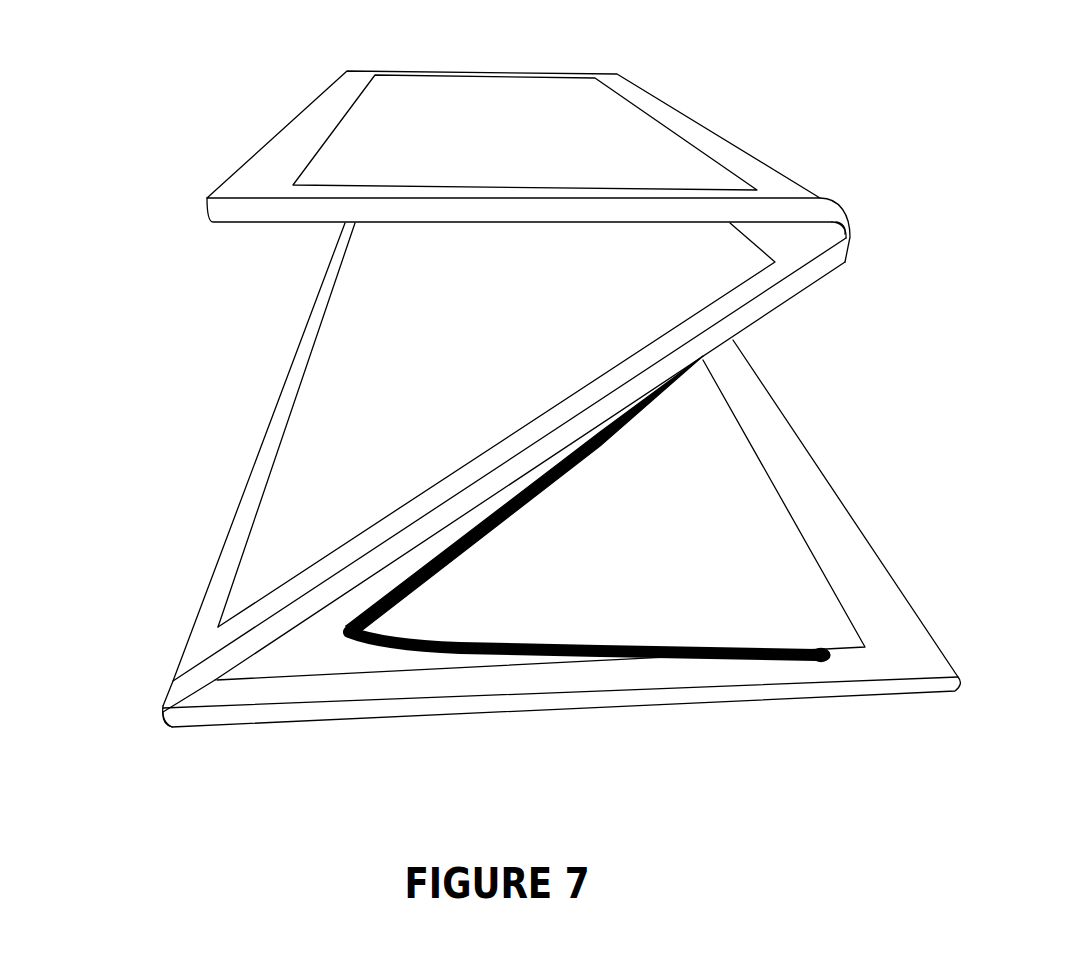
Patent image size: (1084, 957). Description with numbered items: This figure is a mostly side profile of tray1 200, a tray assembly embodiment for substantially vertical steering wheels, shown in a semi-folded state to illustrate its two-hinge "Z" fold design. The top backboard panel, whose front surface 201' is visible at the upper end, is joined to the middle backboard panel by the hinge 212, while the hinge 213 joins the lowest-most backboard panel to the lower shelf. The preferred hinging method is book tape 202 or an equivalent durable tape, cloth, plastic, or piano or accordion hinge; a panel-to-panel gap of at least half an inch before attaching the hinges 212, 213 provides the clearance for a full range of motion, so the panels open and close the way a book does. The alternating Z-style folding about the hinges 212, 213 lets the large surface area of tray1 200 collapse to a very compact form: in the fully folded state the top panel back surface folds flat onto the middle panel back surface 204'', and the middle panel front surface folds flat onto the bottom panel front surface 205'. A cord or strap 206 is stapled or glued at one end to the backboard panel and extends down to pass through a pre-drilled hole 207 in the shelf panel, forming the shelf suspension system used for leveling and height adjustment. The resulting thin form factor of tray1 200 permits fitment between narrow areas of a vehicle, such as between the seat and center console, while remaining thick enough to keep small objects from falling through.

The tray1 200 is at (692, 47).
The top panel front surface 201' is at (525, 131).
The book tape 202 is at (288, 137).
The middle panel back surface 204'' is at (504, 464).
The bottom panel front surface 205' is at (561, 533).
The cord or strap 206 is at (467, 552).
The pre-drilled hole 207 is at (832, 657).
The hinge 212 is at (851, 235).
The hinge 213 is at (162, 707).